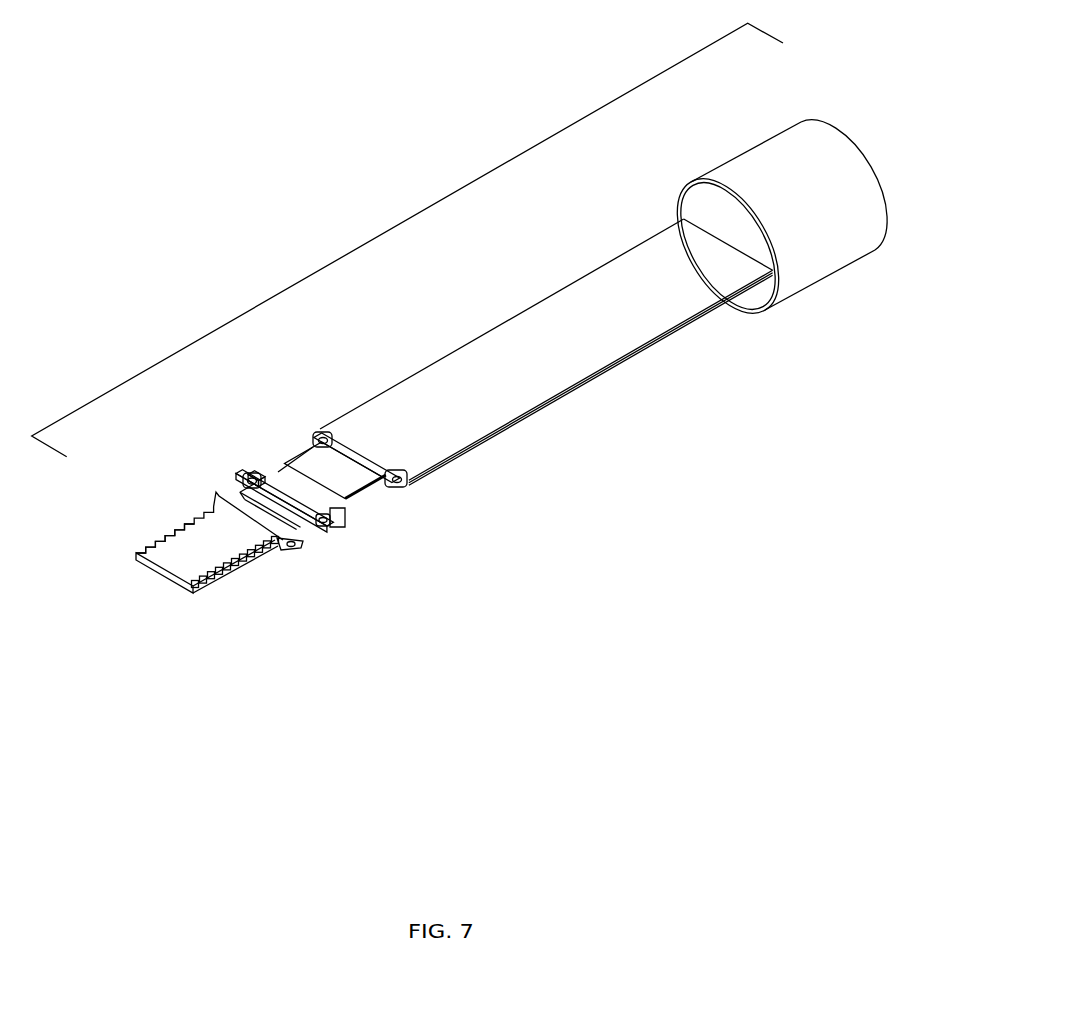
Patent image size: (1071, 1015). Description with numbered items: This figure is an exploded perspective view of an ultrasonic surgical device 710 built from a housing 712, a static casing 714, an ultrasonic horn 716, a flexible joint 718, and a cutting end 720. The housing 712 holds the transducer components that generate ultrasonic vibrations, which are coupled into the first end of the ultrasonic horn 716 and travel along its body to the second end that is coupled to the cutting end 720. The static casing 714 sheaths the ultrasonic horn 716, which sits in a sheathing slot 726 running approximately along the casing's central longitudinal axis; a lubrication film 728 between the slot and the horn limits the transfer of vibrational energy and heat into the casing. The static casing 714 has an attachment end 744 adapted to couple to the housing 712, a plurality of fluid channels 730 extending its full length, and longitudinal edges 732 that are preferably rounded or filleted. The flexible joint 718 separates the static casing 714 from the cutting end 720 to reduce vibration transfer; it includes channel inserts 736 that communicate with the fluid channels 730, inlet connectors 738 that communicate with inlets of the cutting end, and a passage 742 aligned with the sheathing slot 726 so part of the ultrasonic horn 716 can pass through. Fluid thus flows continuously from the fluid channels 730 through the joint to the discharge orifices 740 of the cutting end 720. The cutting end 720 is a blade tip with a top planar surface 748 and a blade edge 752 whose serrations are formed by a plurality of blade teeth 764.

The ultrasonic surgical device 710 is at (341, 192).
The housing 712 is at (771, 222).
The static casing 714 is at (546, 324).
The ultrasonic horn 716 is at (344, 485).
The flexible joint 718 is at (428, 563).
The cutting end 720 is at (188, 561).
The sheathing slot 726 is at (321, 432).
The lubrication film 728 is at (319, 465).
The fluid channels 730 is at (441, 497).
The longitudinal edges 732 is at (591, 377).
The channel inserts 736 is at (260, 473).
The inlet connectors 738 is at (220, 466).
The discharge orifices 740 is at (321, 566).
The passage 742 is at (303, 525).
The attachment end 744 is at (747, 254).
The top planar surface 748 is at (209, 558).
The blade edge 752 is at (252, 574).
The blade teeth 764 is at (148, 522).